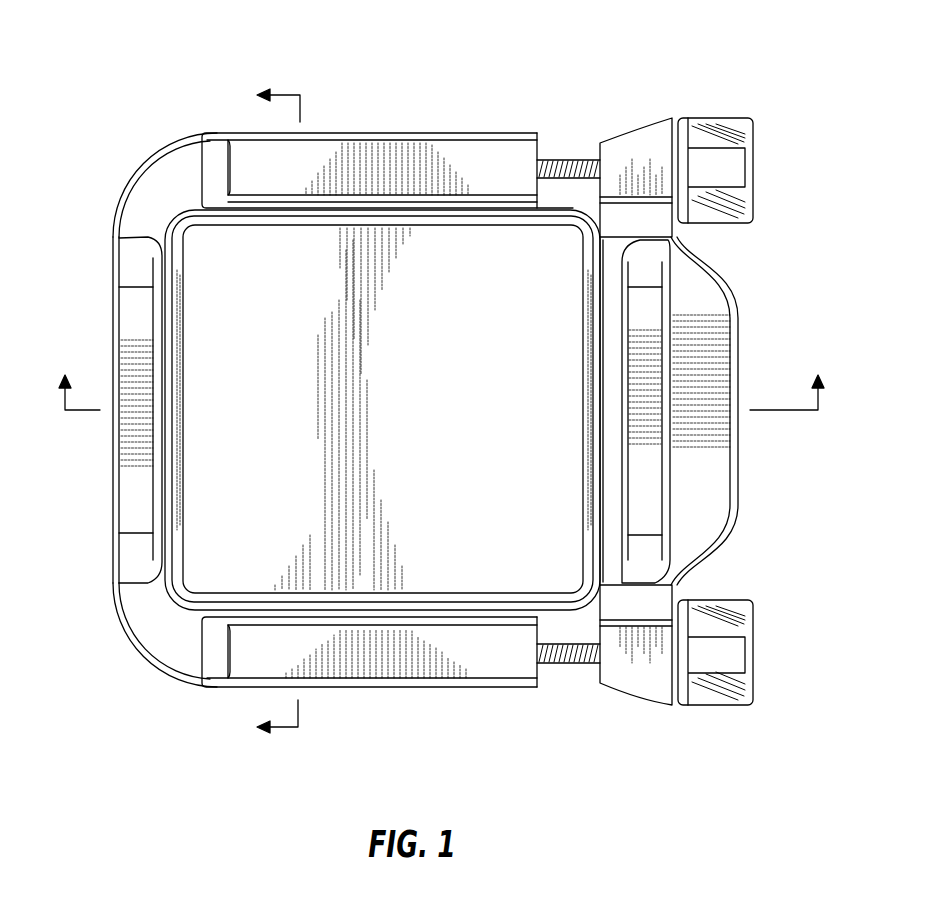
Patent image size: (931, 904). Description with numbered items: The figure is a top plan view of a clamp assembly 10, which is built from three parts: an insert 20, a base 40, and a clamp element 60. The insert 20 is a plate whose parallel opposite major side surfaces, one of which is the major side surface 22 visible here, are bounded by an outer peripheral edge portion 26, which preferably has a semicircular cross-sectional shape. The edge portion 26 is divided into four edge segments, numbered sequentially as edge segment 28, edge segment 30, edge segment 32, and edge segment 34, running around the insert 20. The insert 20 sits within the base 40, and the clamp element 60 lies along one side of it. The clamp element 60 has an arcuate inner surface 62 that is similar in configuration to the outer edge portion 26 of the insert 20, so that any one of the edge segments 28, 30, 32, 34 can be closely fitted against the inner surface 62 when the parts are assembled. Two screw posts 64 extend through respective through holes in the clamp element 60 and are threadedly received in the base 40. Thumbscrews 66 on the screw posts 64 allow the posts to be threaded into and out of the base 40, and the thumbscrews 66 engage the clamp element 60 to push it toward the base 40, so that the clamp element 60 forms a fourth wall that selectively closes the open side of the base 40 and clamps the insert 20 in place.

The clamp assembly 10 is at (389, 38).
The insert 20 is at (459, 248).
The major side surface 22 is at (309, 242).
The outer peripheral edge portion 26 is at (199, 206).
The edge segment 28 is at (504, 197).
The edge segment 30 is at (604, 323).
The edge segment 32 is at (243, 614).
The edge segment 34 is at (165, 507).
The base 40 is at (397, 686).
The clamp element 60 is at (739, 486).
The inner surface 62 is at (616, 528).
The screw post 64 is at (568, 160).
The thumbscrew 66 is at (712, 118).